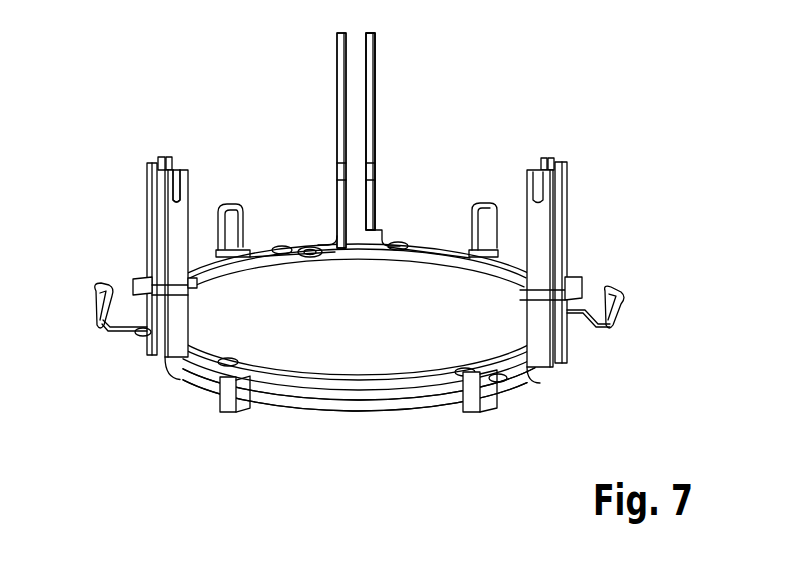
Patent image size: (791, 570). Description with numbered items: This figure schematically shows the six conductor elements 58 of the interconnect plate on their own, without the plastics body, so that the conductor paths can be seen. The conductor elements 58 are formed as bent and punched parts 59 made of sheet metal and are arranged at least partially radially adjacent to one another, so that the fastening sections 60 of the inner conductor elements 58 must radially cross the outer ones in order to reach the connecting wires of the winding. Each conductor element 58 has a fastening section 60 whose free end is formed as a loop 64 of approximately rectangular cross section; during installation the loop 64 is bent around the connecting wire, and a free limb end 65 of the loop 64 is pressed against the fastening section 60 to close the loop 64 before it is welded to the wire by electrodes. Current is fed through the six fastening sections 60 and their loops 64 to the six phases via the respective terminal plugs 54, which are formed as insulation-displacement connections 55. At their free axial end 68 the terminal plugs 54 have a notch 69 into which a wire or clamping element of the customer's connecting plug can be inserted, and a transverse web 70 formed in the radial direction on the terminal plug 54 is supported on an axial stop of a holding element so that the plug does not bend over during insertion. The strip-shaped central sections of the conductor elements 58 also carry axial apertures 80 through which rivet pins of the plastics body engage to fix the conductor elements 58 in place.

The terminal plug 54 is at (375, 90).
The insulation-displacement connection 55 is at (370, 131).
The conductor element 58 is at (375, 382).
The bent and punched part 59 is at (359, 389).
The fastening section 60 is at (483, 192).
The loop 64 is at (102, 285).
The free limb end 65 is at (96, 318).
The free axial end 68 is at (372, 45).
The notch 69 is at (176, 172).
The transverse web 70 is at (197, 290).
The axial aperture 80 is at (290, 254).